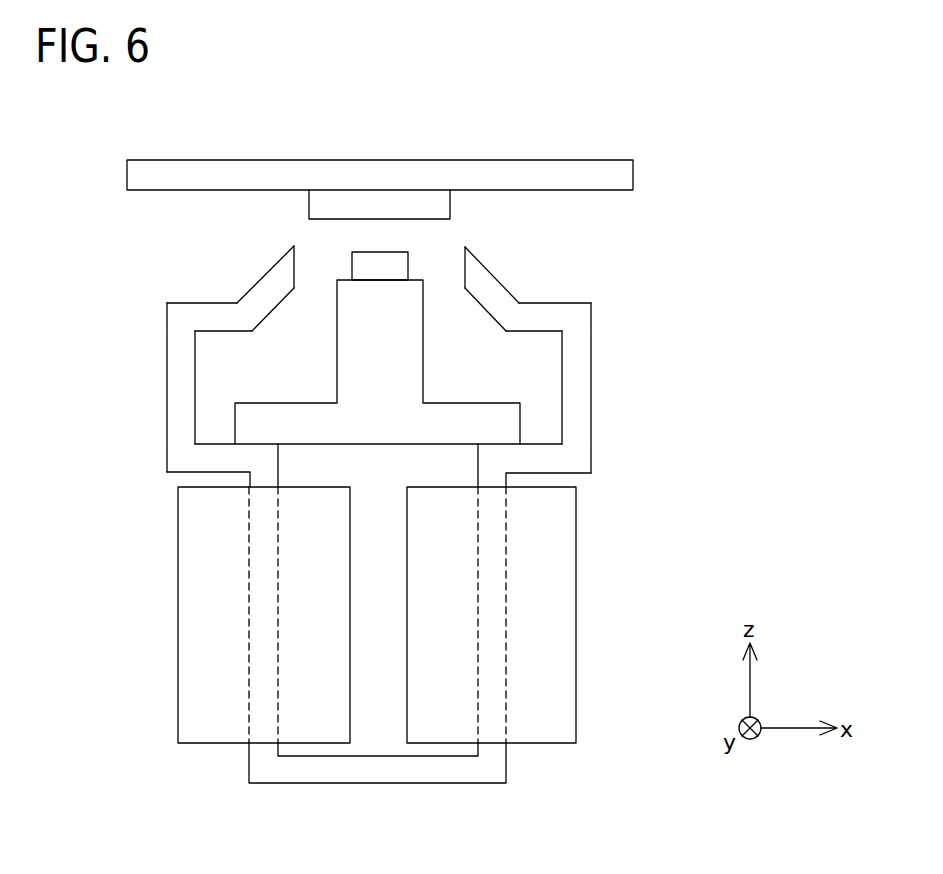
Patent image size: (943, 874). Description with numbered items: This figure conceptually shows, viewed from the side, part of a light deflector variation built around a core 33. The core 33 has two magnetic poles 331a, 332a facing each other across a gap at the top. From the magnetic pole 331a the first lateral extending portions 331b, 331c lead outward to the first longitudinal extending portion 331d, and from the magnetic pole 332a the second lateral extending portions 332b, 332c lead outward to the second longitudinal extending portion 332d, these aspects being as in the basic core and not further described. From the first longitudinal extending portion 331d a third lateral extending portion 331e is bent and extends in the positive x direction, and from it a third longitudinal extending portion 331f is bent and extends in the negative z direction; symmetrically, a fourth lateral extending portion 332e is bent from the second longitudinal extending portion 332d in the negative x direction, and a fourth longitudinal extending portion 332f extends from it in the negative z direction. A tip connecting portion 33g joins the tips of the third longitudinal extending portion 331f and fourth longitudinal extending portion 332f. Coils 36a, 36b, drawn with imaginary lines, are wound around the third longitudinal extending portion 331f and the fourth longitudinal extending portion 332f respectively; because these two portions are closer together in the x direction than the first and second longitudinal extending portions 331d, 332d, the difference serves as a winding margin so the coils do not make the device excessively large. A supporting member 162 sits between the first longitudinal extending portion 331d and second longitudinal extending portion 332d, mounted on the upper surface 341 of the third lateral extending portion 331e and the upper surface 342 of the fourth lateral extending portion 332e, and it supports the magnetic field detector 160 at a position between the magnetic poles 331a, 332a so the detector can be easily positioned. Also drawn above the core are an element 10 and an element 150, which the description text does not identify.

The base plate 10 is at (613, 175).
The fixed block 150 is at (360, 202).
The magnetic field detector 160 is at (378, 263).
The supporting member 162 is at (393, 306).
The core 33 is at (675, 317).
The magnetic pole 331a is at (296, 266).
The first lateral extending portion 331b is at (270, 283).
The first lateral extending portion 331c is at (215, 312).
The first longitudinal extending portion 331d is at (180, 372).
The third lateral extending portion 331e is at (212, 463).
The third longitudinal extending portion 331f is at (262, 625).
The magnetic pole 332a is at (463, 266).
The second lateral extending portion 332b is at (487, 285).
The second lateral extending portion 332c is at (538, 317).
The second longitudinal extending portion 332d is at (577, 372).
The fourth lateral extending portion 332e is at (543, 463).
The fourth longitudinal extending portion 332f is at (493, 625).
The upper surface 341 is at (215, 443).
The upper surface 342 is at (540, 442).
The coil 36a is at (195, 572).
The coil 36b is at (560, 573).
The tip connecting portion 33g is at (388, 770).